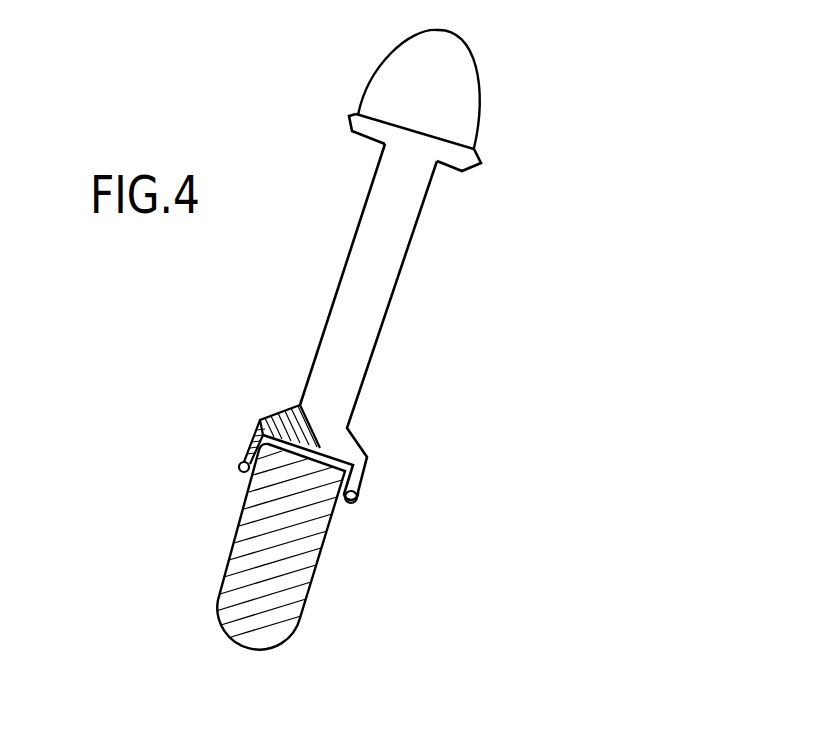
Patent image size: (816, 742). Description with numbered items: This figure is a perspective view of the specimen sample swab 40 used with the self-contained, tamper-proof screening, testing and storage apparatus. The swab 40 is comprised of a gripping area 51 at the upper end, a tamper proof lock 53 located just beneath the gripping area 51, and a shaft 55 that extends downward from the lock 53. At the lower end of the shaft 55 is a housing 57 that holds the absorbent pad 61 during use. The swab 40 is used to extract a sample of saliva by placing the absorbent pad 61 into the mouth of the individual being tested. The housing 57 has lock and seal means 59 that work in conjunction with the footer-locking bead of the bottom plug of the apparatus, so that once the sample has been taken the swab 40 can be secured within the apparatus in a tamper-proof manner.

The specimen sample swab 40 is at (498, 58).
The gripping area 51 is at (462, 124).
The tamper proof lock 53 is at (486, 176).
The shaft 55 is at (346, 293).
The housing 57 is at (248, 433).
The lock and seal means 59 is at (228, 460).
The absorbent pad 61 is at (302, 570).